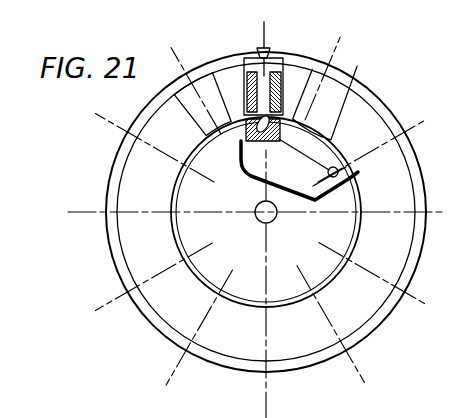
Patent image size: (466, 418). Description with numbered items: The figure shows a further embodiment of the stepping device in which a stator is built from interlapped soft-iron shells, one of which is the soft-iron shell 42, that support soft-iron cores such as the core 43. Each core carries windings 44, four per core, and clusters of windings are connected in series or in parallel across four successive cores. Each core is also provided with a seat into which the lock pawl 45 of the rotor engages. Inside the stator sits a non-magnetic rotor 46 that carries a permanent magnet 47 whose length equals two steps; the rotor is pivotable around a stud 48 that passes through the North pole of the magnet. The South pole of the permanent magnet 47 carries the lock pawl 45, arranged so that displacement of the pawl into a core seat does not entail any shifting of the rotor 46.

The soft-iron shell 42 is at (312, 362).
The core 43 is at (281, 85).
The winding 44 is at (283, 92).
The lock pawl 45 is at (203, 141).
The non-magnetic rotor 46 is at (329, 268).
The permanent magnet 47 is at (322, 188).
The stud 48 is at (358, 172).